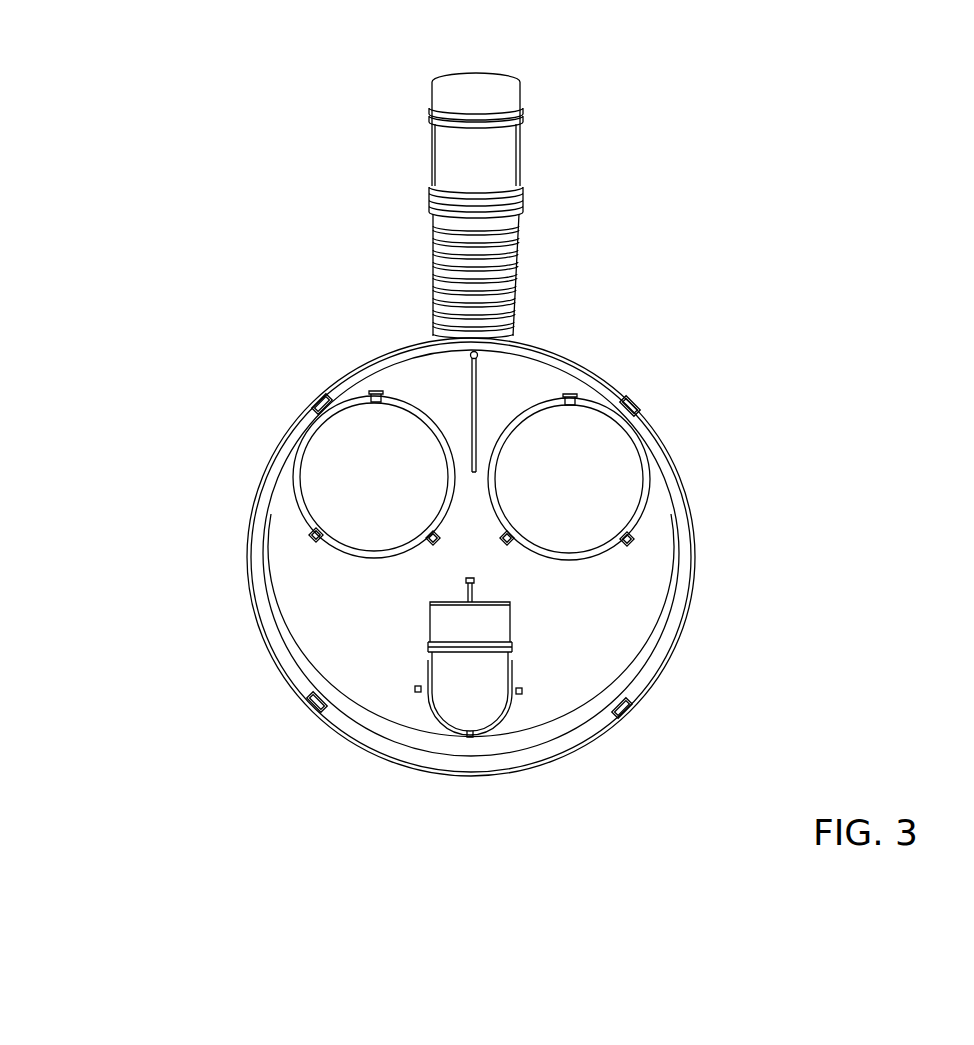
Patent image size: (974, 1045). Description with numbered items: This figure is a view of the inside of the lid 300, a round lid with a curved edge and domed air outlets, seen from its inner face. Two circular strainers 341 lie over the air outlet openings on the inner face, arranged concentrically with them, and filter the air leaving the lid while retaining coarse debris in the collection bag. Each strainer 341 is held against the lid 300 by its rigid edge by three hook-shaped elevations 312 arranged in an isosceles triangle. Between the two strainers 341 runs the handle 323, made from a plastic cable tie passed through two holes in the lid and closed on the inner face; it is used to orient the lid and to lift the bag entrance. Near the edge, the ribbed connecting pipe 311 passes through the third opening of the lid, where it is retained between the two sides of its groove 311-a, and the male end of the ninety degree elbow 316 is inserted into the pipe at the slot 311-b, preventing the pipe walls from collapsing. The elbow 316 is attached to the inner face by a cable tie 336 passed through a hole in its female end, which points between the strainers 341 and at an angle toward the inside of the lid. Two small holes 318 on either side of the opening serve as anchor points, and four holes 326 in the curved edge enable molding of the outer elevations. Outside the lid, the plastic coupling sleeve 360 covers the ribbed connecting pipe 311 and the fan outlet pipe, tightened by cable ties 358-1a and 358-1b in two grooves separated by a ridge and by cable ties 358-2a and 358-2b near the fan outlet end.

The lid 300 is at (522, 377).
The ribbed connecting pipe 311 is at (435, 262).
The groove 311-a is at (440, 727).
The slot 311-b is at (472, 740).
The elevations (hooks) 312 is at (370, 392).
The 90 degree elbow 316 is at (478, 690).
The small holes 318 is at (417, 690).
The handle 323 is at (476, 393).
The holes 326 is at (320, 395).
The cable tie 336 is at (467, 588).
The strainers 341 is at (373, 473).
The cable tie 358-1a is at (521, 206).
The cable tie 358-1b is at (520, 184).
The cable tie 358-2a is at (521, 118).
The cable tie 358-2b is at (511, 107).
The plastic coupling sleeve 360 is at (457, 153).